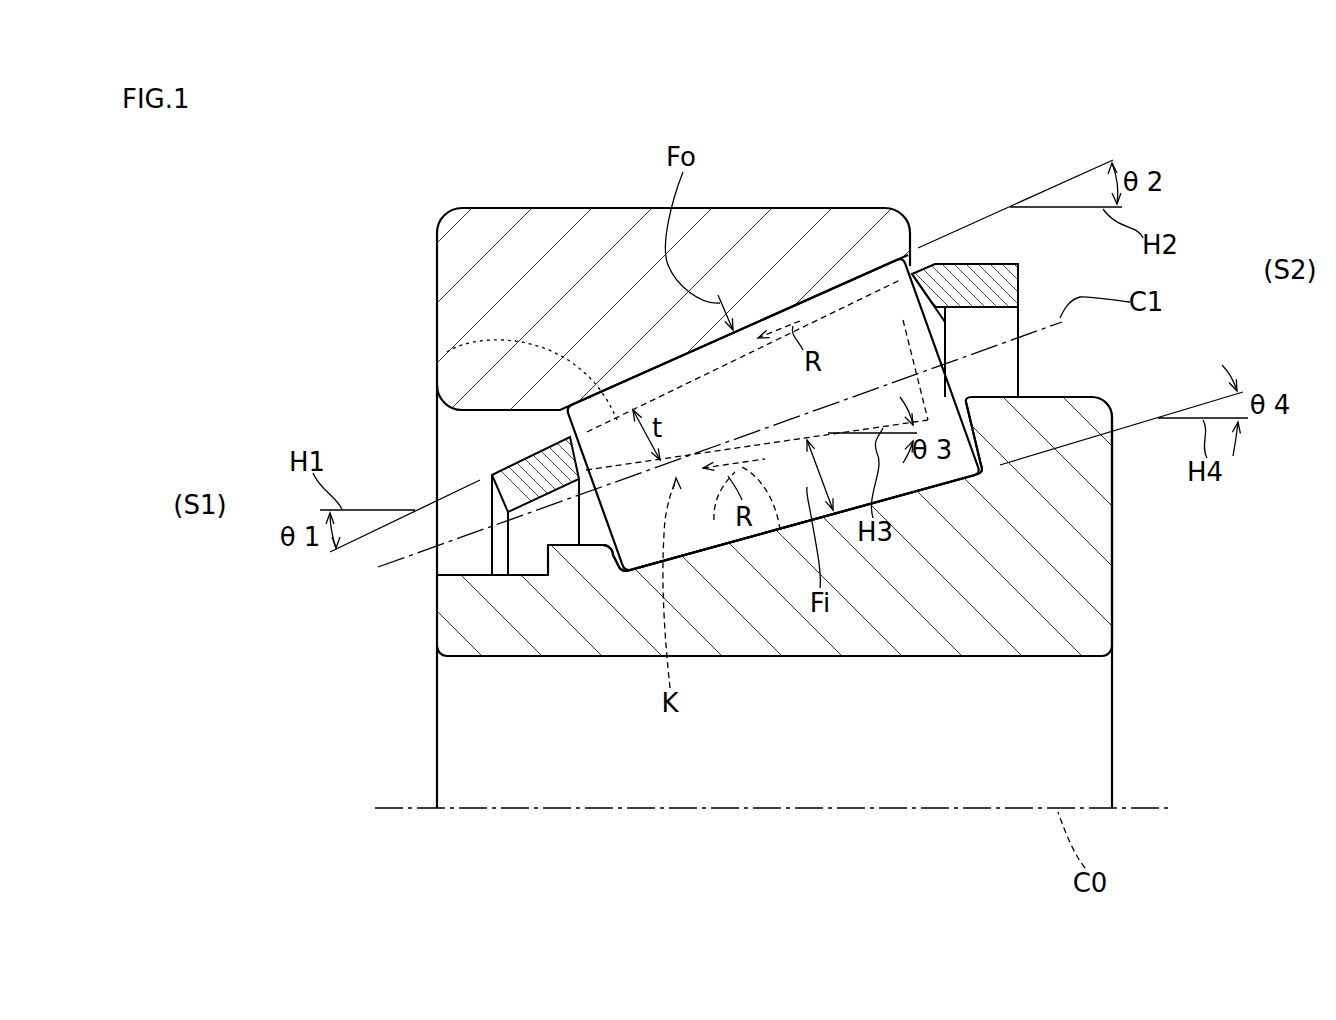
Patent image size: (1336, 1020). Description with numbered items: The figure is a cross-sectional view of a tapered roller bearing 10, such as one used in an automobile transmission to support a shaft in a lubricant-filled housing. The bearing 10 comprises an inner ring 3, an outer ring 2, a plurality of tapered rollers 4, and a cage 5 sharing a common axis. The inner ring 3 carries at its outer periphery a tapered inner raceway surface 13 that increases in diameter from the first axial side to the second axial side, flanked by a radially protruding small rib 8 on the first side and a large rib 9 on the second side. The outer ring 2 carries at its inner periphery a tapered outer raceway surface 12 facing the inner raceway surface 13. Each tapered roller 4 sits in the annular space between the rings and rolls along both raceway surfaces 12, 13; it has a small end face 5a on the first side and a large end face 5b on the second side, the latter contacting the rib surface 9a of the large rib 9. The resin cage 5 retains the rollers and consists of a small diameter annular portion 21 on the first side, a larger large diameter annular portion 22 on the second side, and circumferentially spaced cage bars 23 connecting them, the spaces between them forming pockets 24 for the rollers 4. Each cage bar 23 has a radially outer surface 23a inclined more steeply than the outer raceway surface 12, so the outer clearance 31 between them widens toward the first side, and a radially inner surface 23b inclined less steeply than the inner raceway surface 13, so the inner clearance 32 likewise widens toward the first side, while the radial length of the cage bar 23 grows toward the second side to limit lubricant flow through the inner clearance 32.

The tapered roller bearing 10 is at (520, 205).
The outer ring 2 is at (603, 223).
The inner ring 3 is at (1010, 616).
The tapered roller 4 is at (850, 500).
The cage 5 is at (1021, 271).
The small end face 5a is at (568, 429).
The large end face 5b is at (947, 378).
The small rib 8 is at (587, 557).
The large rib 9 is at (1102, 505).
The rib surface 9a is at (980, 478).
The outer raceway surface 12 is at (771, 311).
The inner raceway surface 13 is at (905, 478).
The small diameter annular portion 21 is at (494, 480).
The large diameter annular portion 22 is at (998, 276).
The cage bar 23 is at (862, 326).
The radially outer surface 23a is at (447, 352).
The radially inner surface 23b is at (780, 530).
The pocket 24 is at (876, 322).
The outer clearance 31 is at (840, 334).
The inner clearance 32 is at (714, 520).